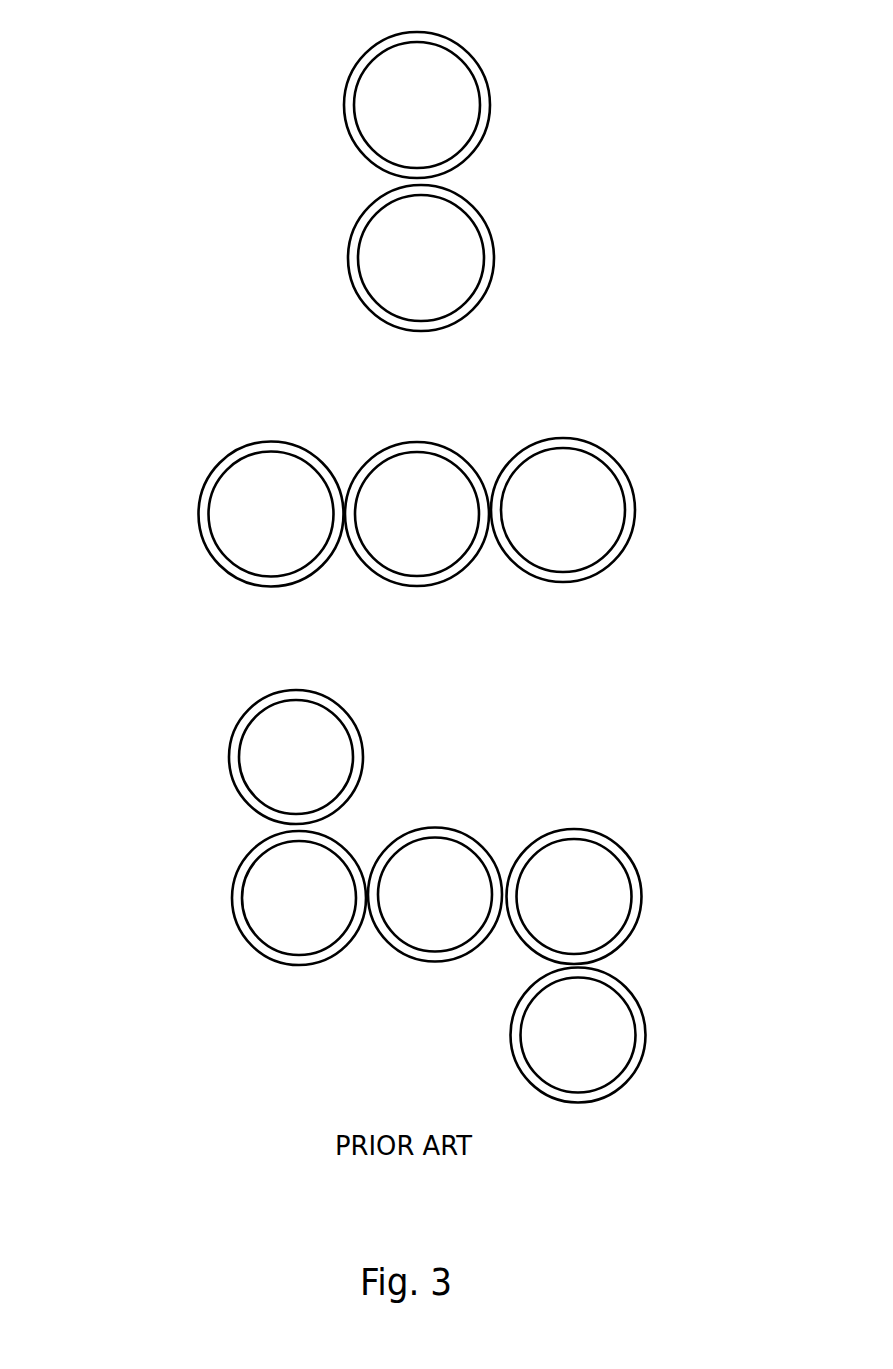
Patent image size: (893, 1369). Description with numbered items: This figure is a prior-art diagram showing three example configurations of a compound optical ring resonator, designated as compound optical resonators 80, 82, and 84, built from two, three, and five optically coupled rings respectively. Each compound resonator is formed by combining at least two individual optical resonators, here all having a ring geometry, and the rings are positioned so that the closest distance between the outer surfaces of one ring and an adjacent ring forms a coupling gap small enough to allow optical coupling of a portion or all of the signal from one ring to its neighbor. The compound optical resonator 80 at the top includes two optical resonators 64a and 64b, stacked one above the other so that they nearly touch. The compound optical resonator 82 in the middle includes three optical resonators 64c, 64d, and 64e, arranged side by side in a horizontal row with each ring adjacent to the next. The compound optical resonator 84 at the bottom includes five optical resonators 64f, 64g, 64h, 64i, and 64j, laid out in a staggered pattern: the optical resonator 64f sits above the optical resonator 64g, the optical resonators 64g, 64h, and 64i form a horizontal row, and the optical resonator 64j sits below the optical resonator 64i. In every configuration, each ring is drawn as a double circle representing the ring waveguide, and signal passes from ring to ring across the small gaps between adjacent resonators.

The compound optical resonator 80 is at (407, 181).
The compound optical resonator 82 is at (345, 482).
The compound optical resonator 84 is at (405, 878).
The optical resonator 64a is at (507, 87).
The optical resonator 64b is at (507, 236).
The optical resonator 64c is at (265, 427).
The optical resonator 64d is at (428, 427).
The optical resonator 64e is at (563, 427).
The optical resonator 64f is at (348, 713).
The optical resonator 64g is at (349, 825).
The optical resonator 64h is at (472, 820).
The optical resonator 64i is at (650, 876).
The optical resonator 64j is at (650, 1025).